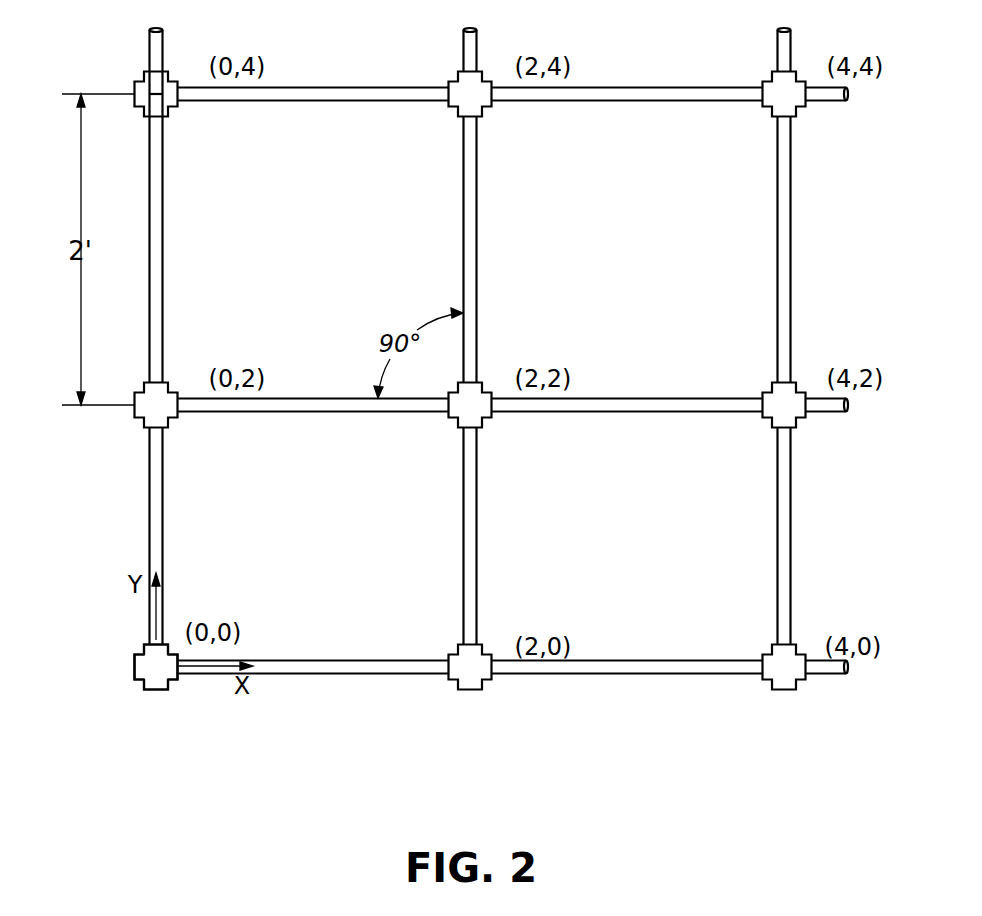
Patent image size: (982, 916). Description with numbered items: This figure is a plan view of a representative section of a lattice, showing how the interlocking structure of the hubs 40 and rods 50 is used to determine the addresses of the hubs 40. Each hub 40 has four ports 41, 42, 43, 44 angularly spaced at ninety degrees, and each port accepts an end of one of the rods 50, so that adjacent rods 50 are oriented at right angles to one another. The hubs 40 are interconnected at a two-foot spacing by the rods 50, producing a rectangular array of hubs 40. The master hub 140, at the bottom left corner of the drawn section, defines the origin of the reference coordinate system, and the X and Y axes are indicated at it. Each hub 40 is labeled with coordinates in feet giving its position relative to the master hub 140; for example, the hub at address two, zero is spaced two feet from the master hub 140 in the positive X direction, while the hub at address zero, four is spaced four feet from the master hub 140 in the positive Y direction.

The hub 40 is at (168, 108).
The rod 50 is at (165, 285).
The master hub 140 is at (143, 683).
The port 41 is at (155, 689).
The port 42 is at (134, 660).
The port 43 is at (162, 642).
The port 44 is at (180, 660).